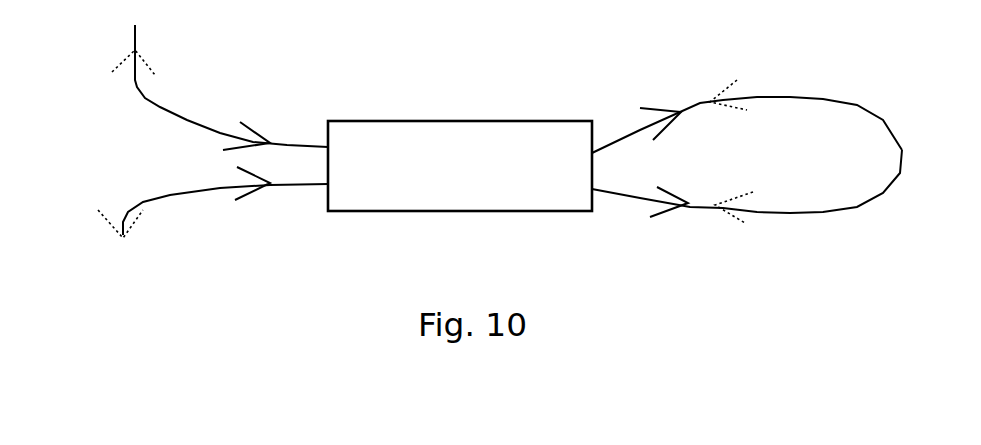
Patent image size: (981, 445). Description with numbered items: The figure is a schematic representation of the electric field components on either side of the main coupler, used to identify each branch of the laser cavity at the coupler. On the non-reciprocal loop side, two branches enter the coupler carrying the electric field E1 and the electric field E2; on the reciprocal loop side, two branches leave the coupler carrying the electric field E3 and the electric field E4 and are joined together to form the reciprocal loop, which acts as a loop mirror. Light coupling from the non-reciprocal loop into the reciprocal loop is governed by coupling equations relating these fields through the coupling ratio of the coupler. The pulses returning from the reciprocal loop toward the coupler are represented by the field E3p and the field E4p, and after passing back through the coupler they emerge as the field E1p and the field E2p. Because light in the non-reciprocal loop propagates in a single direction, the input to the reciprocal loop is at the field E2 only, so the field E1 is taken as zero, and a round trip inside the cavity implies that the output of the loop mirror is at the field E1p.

The electric field in branch 1 E1 is at (231, 87).
The electric field in branch 2 E2 is at (225, 207).
The electric field in branch 3 E3 is at (747, 113).
The electric field in branch 4 E4 is at (747, 204).
The electric field of returning pulse in branch 1 E1p is at (97, 39).
The electric field of returning pulse in branch 2 E2p is at (90, 249).
The electric field of returning pulse in branch 3 E3p is at (752, 229).
The electric field of returning pulse in branch 4 E4p is at (761, 80).